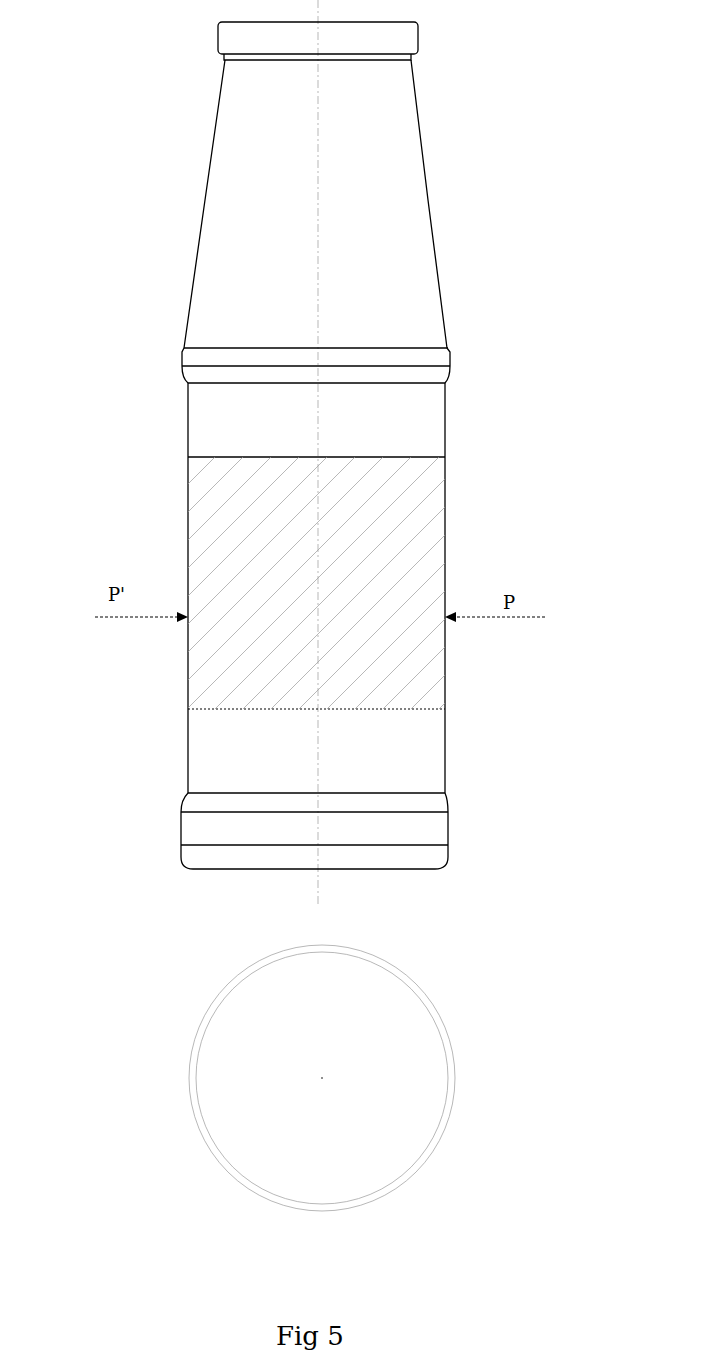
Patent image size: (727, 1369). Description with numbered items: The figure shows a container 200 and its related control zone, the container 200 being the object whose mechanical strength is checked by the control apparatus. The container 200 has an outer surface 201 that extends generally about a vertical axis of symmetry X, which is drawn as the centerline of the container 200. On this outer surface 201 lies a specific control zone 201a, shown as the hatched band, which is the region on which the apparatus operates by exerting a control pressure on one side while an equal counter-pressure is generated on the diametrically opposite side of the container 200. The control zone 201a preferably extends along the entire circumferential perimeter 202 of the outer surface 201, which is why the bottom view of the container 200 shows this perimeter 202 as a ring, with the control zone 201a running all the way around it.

The container 200 is at (463, 442).
The outer surface 201 is at (456, 543).
The control zone 201a is at (384, 608).
The circumferential perimeter 202 is at (450, 1040).
The vertical axis of symmetry X is at (318, 162).